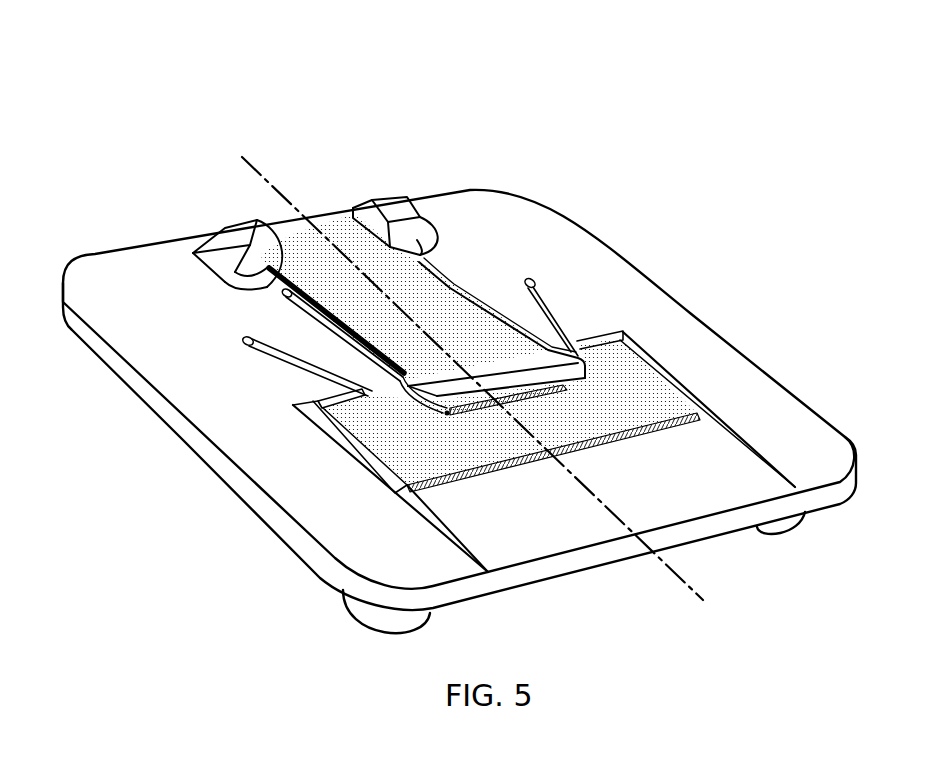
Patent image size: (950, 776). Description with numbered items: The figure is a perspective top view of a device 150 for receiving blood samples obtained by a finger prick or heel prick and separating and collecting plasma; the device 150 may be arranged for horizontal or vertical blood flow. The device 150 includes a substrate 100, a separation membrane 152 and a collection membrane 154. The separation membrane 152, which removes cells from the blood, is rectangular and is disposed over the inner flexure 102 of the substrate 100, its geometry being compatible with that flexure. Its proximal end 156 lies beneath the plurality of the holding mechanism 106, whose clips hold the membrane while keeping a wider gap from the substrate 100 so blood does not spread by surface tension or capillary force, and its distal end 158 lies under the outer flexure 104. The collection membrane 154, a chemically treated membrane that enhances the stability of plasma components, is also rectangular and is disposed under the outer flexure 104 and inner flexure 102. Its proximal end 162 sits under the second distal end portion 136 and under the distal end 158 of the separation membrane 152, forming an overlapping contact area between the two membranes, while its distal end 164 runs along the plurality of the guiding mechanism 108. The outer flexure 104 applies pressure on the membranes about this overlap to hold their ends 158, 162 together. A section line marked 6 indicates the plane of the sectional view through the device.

The substrate 100 is at (143, 357).
The inner flexure 102 is at (345, 330).
The outer flexure 104 is at (329, 358).
The holding mechanism 106 is at (388, 212).
The guiding mechanism 108 is at (667, 383).
The second distal end portion 136 is at (428, 380).
The device 150 is at (752, 68).
The separation membrane 152 is at (422, 279).
The collection membrane 154 is at (517, 392).
The proximal end 156 is at (347, 238).
The distal end 158 is at (488, 398).
The proximal end 162 is at (608, 357).
The distal end 164 is at (598, 428).
The section line for FIG. 6 is at (252, 173).